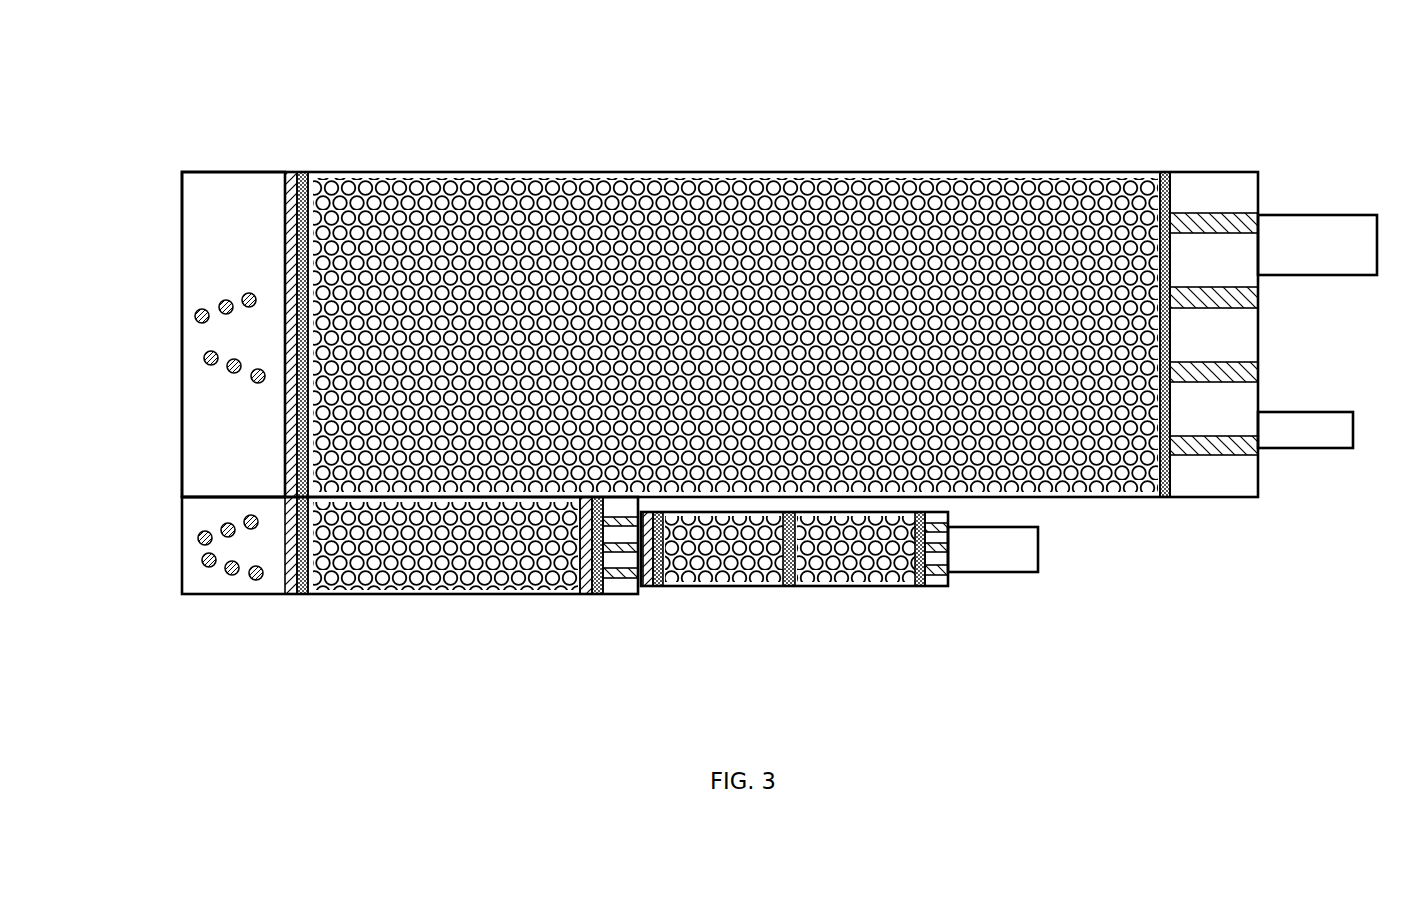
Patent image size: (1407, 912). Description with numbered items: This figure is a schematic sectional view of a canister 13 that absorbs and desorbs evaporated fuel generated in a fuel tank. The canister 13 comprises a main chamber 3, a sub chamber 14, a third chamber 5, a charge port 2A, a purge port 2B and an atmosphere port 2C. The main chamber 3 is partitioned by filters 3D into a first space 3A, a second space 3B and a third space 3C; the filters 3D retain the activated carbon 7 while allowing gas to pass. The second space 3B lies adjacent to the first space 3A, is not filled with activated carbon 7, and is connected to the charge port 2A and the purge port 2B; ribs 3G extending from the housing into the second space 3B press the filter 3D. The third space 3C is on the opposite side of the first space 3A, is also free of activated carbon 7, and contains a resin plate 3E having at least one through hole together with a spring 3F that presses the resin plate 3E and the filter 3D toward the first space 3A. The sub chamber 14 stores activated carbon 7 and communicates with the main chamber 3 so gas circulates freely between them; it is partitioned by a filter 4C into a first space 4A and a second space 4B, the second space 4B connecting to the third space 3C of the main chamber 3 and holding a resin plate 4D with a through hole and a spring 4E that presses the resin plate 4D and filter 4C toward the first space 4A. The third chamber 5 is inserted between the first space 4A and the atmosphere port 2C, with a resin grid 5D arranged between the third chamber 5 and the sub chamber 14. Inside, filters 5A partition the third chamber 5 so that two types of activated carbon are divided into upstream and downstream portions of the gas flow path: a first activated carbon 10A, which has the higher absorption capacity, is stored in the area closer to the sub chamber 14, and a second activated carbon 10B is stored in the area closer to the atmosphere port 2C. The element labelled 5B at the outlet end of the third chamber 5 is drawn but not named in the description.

The canister 13 is at (815, 112).
The main chamber 3 is at (392, 172).
The first space 3A is at (325, 177).
The second space 3B is at (1215, 183).
The third space 3C is at (211, 248).
The filter 3D is at (302, 173).
The resin plate 3E is at (288, 225).
The spring 3F is at (203, 316).
The ribs 3G is at (1217, 452).
The activated carbon 7 is at (518, 185).
The first space 4A is at (368, 592).
The second space 4B is at (203, 530).
The filter 4C is at (303, 592).
The resin plate 4D is at (290, 592).
The spring 4E is at (205, 560).
The sub chamber 14 is at (413, 592).
The third chamber 5 is at (745, 586).
The filter 5A is at (660, 586).
The auxiliary current collector 5B is at (945, 588).
The resin grid 5D is at (625, 586).
The first activated carbon 10A is at (712, 586).
The second activated carbon 10B is at (823, 586).
The charge port 2A is at (1340, 225).
The purge port 2B is at (1330, 412).
The atmosphere port 2C is at (1013, 553).